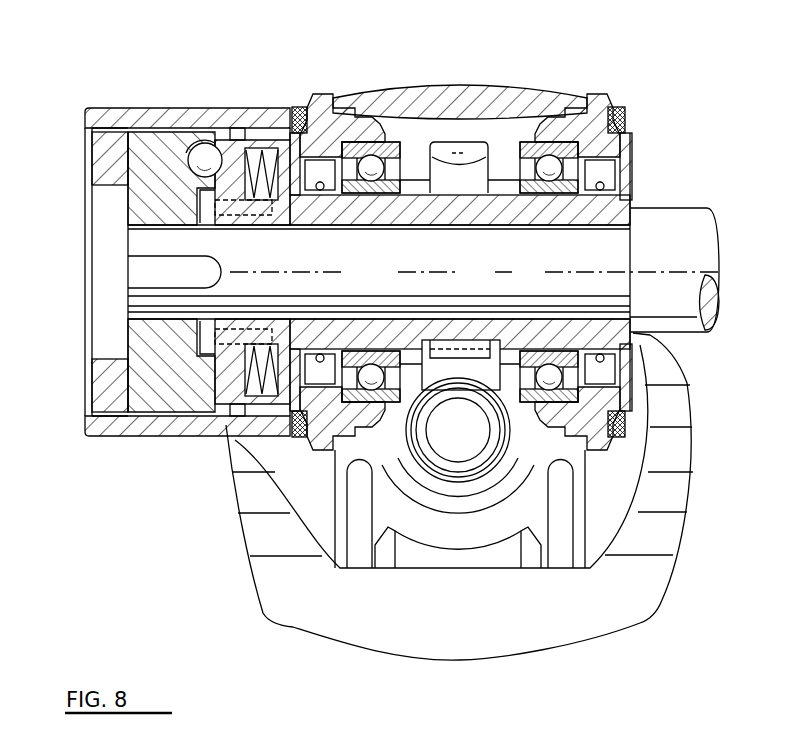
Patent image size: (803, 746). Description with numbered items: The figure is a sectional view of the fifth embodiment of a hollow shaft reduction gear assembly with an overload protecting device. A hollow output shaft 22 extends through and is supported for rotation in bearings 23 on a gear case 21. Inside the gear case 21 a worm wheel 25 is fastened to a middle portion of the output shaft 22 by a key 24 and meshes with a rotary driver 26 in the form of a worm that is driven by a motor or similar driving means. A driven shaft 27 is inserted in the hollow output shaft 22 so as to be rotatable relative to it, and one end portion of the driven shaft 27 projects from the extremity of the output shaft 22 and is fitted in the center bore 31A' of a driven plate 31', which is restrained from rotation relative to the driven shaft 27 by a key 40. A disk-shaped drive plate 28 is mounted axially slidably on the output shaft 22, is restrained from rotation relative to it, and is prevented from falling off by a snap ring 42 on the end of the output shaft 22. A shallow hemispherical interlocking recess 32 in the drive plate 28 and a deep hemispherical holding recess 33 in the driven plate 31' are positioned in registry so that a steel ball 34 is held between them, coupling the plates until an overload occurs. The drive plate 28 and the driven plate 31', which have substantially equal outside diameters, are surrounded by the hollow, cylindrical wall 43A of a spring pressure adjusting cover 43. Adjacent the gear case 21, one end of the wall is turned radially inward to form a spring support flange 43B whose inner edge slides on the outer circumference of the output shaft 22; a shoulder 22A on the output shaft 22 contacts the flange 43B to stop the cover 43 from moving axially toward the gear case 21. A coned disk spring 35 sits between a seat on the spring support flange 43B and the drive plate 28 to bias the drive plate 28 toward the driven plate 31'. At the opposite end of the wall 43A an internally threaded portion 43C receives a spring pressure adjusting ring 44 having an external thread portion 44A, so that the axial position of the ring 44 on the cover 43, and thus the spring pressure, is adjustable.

The gear case 21 is at (465, 92).
The hollow output shaft 22 is at (612, 207).
The shoulder 22A is at (322, 335).
The bearings 23 is at (388, 142).
The key 24 is at (447, 347).
The worm wheel 25 is at (482, 373).
The rotary driver 26 is at (455, 432).
The driven shaft 27 is at (610, 240).
The drive plate 28 is at (258, 135).
The driven plate 31' is at (171, 217).
The center bore 31A' is at (205, 346).
The interlocking recess 32 is at (242, 160).
The holding recess 33 is at (180, 150).
The steel ball 34 is at (200, 153).
The coned disk spring 35 is at (278, 128).
The key 40 is at (140, 275).
The snap ring 42 is at (200, 227).
The spring pressure adjusting cover 43 is at (97, 437).
The hollow cylindrical wall 43A is at (147, 436).
The spring support flange 43B is at (280, 393).
The internally threaded portion 43C is at (122, 127).
The spring pressure adjusting ring 44 is at (100, 173).
The external thread portion 44A is at (100, 140).